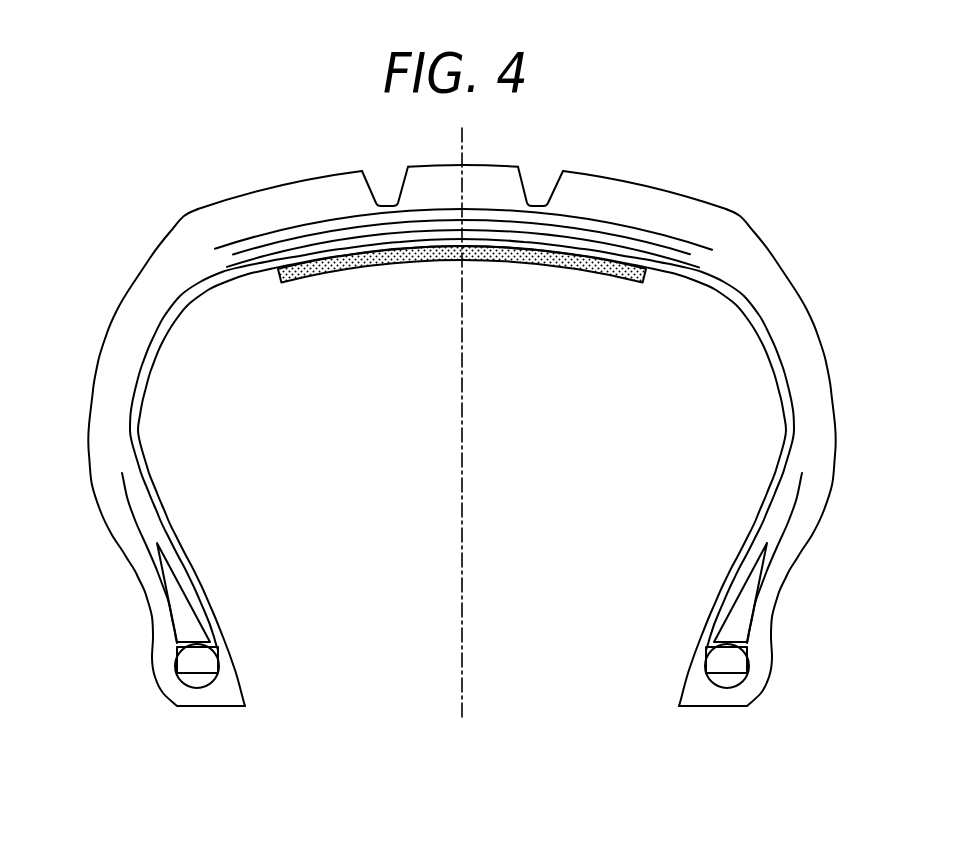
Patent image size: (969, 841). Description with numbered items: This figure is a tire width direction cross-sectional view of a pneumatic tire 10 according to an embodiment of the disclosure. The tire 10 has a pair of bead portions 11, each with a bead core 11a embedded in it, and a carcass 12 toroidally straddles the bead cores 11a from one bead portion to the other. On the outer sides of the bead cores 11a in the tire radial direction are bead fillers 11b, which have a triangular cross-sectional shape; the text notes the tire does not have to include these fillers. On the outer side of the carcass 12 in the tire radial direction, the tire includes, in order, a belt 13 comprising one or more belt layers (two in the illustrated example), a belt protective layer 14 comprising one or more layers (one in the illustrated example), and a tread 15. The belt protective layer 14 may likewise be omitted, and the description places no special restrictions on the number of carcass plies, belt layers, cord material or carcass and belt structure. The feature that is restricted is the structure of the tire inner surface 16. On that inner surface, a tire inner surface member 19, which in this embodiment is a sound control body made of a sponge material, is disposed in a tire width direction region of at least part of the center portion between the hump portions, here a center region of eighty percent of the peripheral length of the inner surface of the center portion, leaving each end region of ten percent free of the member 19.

The pneumatic tire 10 is at (648, 152).
The bead portions 11 is at (122, 598).
The bead cores 11a is at (195, 662).
The bead fillers 11b is at (185, 608).
The carcass 12 is at (763, 327).
The belt 13 is at (227, 253).
The belt protective layer 14 is at (292, 228).
The tread 15 is at (692, 210).
The tire inner surface 16 is at (728, 305).
The tire inner surface member 19 is at (538, 258).